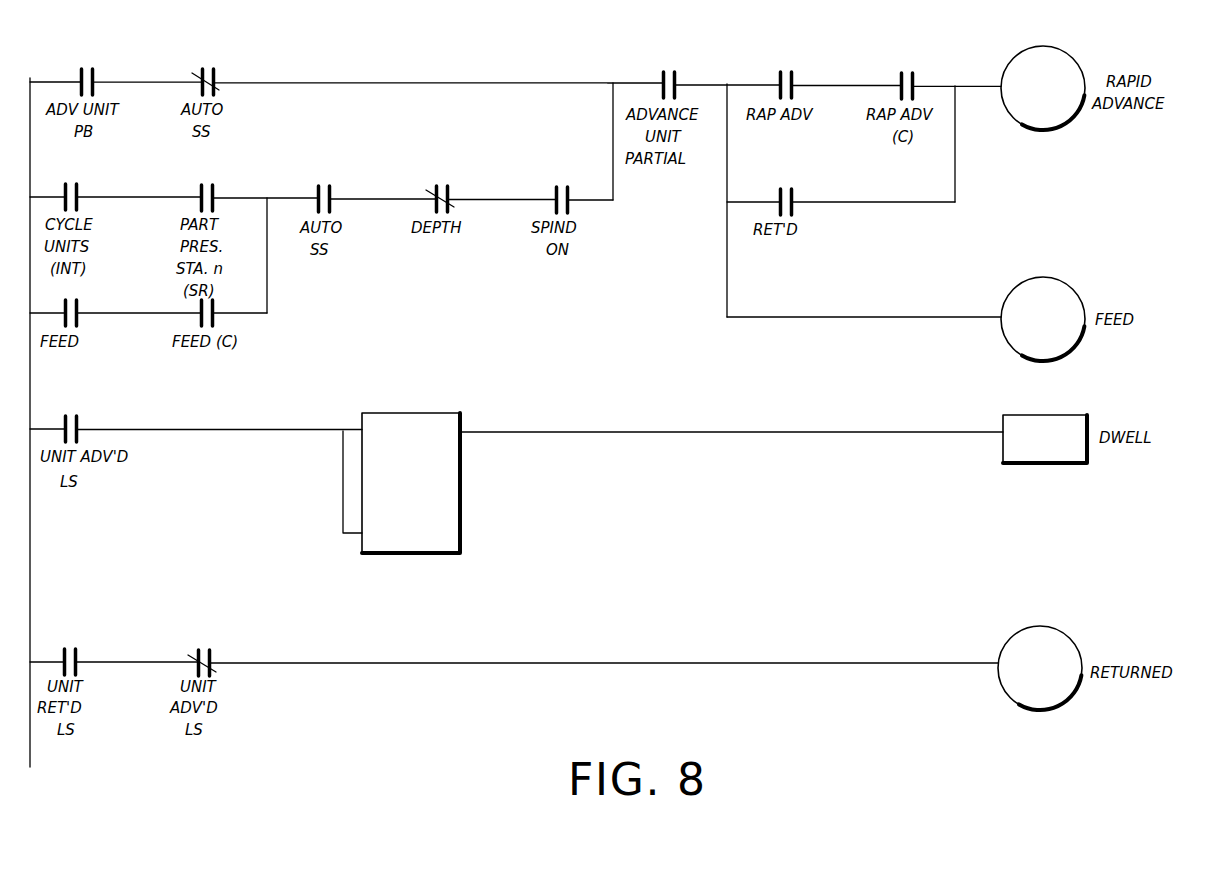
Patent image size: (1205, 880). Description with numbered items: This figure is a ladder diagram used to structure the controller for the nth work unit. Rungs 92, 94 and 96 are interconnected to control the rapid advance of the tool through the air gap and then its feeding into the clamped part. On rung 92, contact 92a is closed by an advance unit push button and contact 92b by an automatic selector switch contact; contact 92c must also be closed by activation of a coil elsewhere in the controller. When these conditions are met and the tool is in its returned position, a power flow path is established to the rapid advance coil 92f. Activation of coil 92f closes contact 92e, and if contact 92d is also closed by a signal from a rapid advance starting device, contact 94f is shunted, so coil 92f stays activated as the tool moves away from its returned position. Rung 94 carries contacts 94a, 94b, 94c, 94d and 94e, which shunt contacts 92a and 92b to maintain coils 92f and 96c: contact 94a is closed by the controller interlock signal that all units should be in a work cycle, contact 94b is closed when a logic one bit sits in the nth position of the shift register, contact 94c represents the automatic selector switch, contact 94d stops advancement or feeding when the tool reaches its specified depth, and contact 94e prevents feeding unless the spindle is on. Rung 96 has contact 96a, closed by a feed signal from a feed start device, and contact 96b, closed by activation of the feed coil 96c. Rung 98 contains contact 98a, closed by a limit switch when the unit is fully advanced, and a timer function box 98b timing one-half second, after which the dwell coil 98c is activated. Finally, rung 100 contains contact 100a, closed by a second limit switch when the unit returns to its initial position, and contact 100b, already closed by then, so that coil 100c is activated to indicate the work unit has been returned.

The rung 92 is at (403, 82).
The contact 92a is at (88, 69).
The contact 92b is at (207, 69).
The contact 92c is at (663, 69).
The contact 92d is at (781, 69).
The contact 92e is at (901, 69).
The rapid advance coil 92f is at (1035, 130).
The rung 94 is at (374, 198).
The contact 94a is at (71, 185).
The contact 94b is at (207, 184).
The contact 94c is at (323, 186).
The contact 94d is at (445, 187).
The contact 94e is at (565, 186).
The contact 94f is at (785, 190).
The rung 96 is at (128, 310).
The contact 96a is at (71, 306).
The contact 96b is at (212, 316).
The coil 96c is at (1048, 278).
The rung 98 is at (588, 431).
The contact 98a is at (72, 418).
The timer function box 98b is at (416, 413).
The dwell coil 98c is at (1034, 415).
The rung 100 is at (460, 660).
The contact 100a is at (70, 648).
The contact 100b is at (204, 648).
The coil 100c is at (1039, 626).